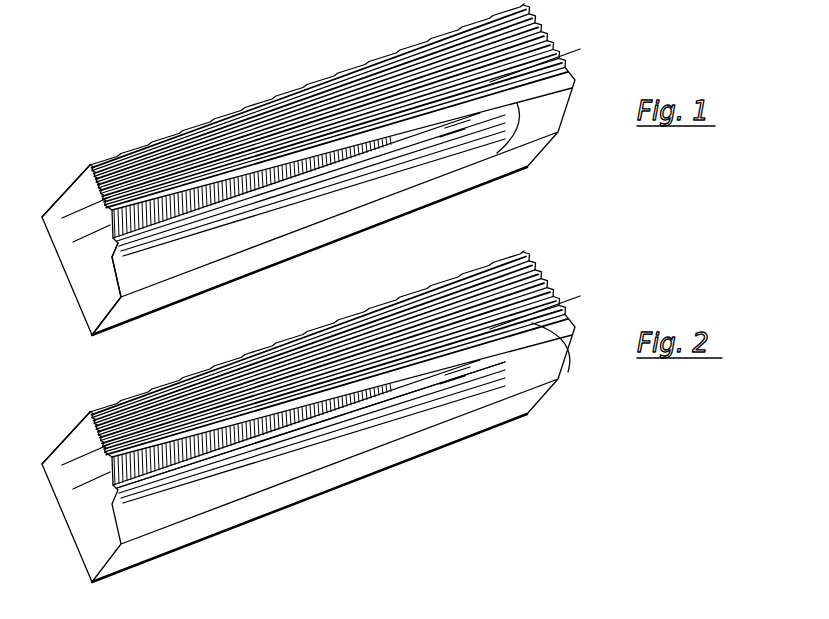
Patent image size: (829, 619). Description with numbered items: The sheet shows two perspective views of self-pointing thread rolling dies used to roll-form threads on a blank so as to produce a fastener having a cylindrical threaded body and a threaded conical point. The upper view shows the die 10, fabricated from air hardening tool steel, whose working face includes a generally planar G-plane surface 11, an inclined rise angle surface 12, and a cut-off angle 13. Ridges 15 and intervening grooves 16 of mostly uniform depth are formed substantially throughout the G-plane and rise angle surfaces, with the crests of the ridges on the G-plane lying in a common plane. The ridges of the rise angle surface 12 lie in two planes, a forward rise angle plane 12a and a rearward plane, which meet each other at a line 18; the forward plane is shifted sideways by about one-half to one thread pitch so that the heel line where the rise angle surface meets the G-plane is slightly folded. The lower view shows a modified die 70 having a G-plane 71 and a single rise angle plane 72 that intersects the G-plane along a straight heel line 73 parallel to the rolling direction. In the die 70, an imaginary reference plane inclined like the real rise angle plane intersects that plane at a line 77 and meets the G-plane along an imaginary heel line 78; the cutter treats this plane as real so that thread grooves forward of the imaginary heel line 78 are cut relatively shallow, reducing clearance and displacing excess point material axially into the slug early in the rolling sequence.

In FIG. 1, the self-pointing thread rolling die 10 is at (265, 85).
In FIG. 1, the G-plane surface 11 is at (204, 148).
In FIG. 1, the rise angle surface 12 is at (523, 72).
In FIG. 1, the forward rise angle plane 12a is at (337, 132).
In FIG. 2, the forward rise angle plane 12a is at (342, 385).
In FIG. 1, the cut-off angle 13 is at (82, 258).
In FIG. 1, the ridges 15 is at (82, 185).
In FIG. 1, the grooves 16 is at (87, 202).
In FIG. 1, the line 18 is at (403, 118).
In FIG. 2, the modified die 70 is at (435, 466).
In FIG. 2, the G-plane 71 is at (303, 440).
In FIG. 2, the rise angle plane 72 is at (568, 372).
In FIG. 2, the heel line 73 is at (565, 312).
In FIG. 2, the line 77 is at (410, 363).
In FIG. 2, the imaginary heel line 78 is at (70, 454).